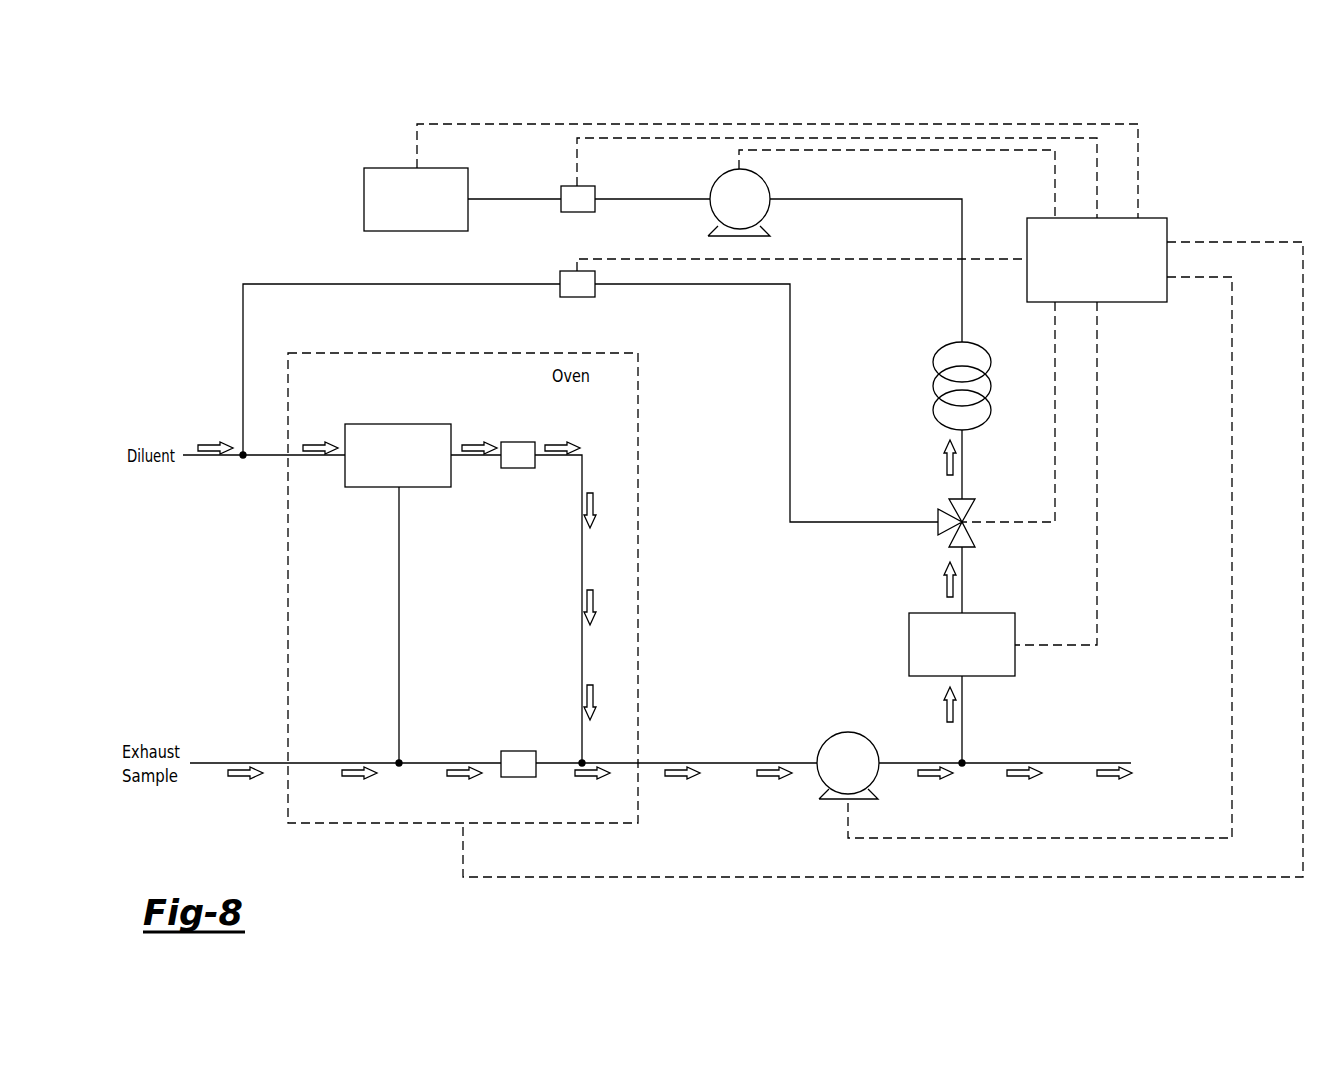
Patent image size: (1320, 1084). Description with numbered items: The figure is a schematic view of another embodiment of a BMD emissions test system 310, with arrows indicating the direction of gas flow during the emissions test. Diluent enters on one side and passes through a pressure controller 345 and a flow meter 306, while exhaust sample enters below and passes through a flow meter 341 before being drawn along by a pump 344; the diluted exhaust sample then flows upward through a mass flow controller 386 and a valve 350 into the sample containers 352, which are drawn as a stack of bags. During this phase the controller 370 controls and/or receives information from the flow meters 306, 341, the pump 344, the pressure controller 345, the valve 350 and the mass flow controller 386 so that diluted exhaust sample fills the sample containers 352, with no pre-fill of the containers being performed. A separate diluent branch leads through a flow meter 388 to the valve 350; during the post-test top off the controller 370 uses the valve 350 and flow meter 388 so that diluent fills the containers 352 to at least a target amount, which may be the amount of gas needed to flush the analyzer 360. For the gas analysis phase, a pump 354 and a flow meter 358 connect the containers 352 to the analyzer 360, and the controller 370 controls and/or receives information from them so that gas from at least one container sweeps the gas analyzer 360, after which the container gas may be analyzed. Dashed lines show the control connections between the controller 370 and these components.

The BMD emissions test system 310 is at (1233, 143).
The analyzer 360 is at (400, 168).
The flow meter 358 is at (570, 186).
The pump 354 is at (718, 178).
The flow meter 388 is at (570, 271).
The controller 370 is at (1042, 218).
The sample containers 352 is at (947, 345).
The valve 350 is at (938, 510).
The mass flow controller 386 is at (909, 645).
The pump 344 is at (830, 741).
The pressure controller 345 is at (399, 424).
The flow meter 306 is at (520, 442).
The flow meter 341 is at (520, 751).